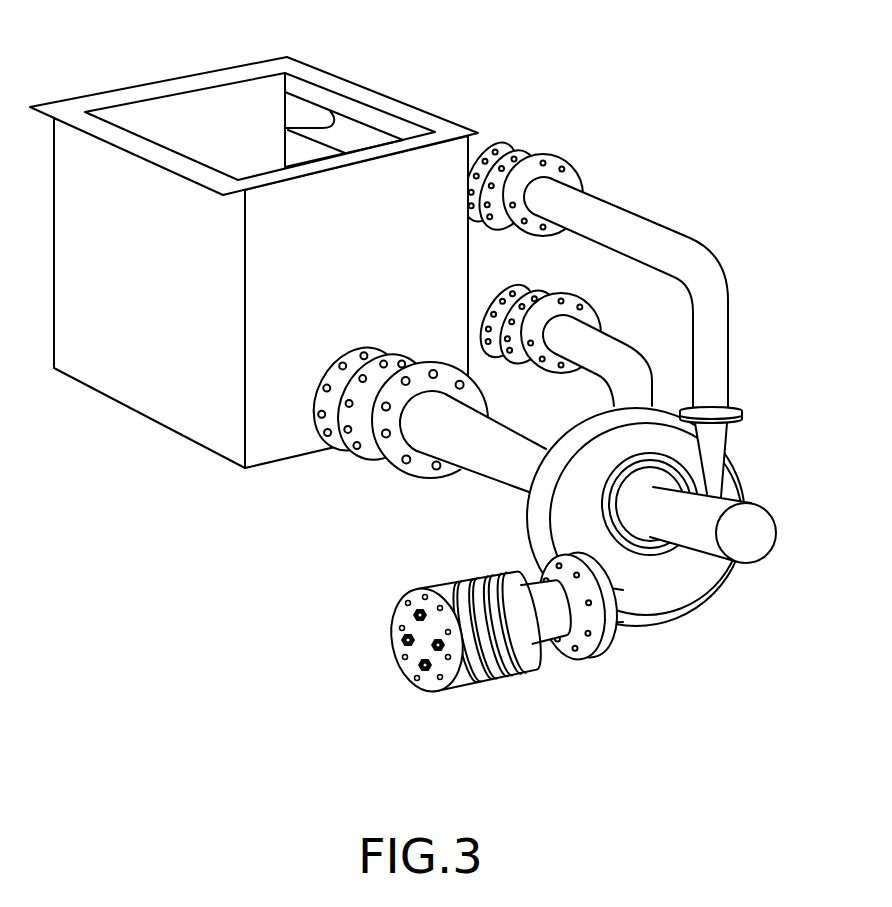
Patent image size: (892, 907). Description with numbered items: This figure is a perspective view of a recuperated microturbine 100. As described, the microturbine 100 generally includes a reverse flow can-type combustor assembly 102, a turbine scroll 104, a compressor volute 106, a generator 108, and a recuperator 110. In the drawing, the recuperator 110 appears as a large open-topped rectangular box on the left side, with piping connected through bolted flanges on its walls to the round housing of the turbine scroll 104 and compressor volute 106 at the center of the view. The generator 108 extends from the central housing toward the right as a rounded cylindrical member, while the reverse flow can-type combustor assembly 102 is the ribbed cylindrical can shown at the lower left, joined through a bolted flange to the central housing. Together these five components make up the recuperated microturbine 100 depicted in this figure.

The recuperated microturbine 100 is at (442, 399).
The reverse flow can-type combustor assembly 102 is at (524, 706).
The turbine scroll 104 is at (632, 558).
The compressor volute 106 is at (667, 557).
The generator 108 is at (772, 518).
The recuperator 110 is at (180, 432).